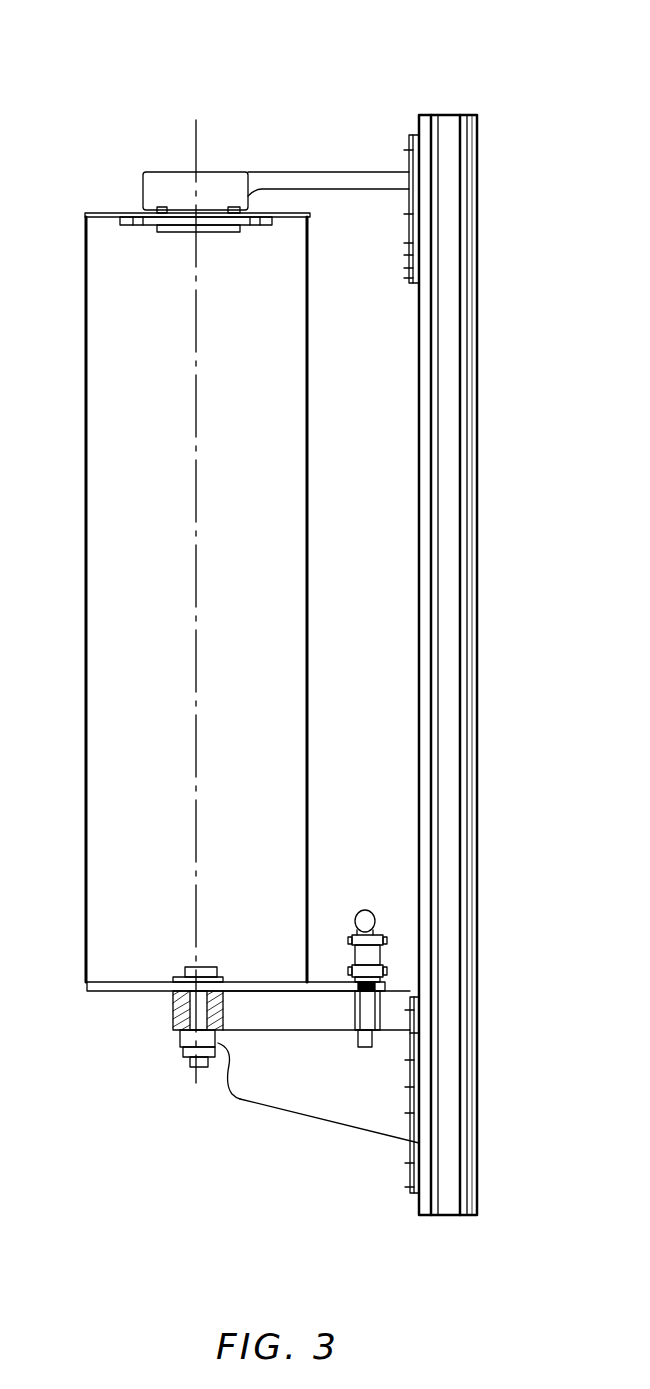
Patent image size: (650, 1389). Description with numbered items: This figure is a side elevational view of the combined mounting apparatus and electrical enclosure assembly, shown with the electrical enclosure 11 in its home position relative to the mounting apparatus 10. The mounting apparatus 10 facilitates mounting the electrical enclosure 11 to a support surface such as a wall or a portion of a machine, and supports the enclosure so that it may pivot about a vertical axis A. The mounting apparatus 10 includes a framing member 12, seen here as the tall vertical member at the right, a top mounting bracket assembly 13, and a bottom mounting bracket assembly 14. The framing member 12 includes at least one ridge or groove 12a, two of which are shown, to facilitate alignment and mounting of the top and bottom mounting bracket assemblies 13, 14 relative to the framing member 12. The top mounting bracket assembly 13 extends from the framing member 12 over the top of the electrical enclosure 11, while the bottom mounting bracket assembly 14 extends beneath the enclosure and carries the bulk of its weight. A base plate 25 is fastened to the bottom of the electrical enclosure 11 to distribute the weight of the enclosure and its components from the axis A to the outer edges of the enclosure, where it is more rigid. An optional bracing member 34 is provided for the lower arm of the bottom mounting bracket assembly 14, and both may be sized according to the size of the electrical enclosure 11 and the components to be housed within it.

The mounting apparatus 10 is at (477, 63).
The electrical enclosure 11 is at (83, 253).
The framing member 12 is at (457, 322).
The ridge or groove 12a is at (435, 588).
The top mounting bracket assembly 13 is at (272, 157).
The bottom mounting bracket assembly 14 is at (287, 1122).
The base plate 25 is at (117, 993).
The bracing member 34 is at (353, 1127).
The axis A is at (197, 140).